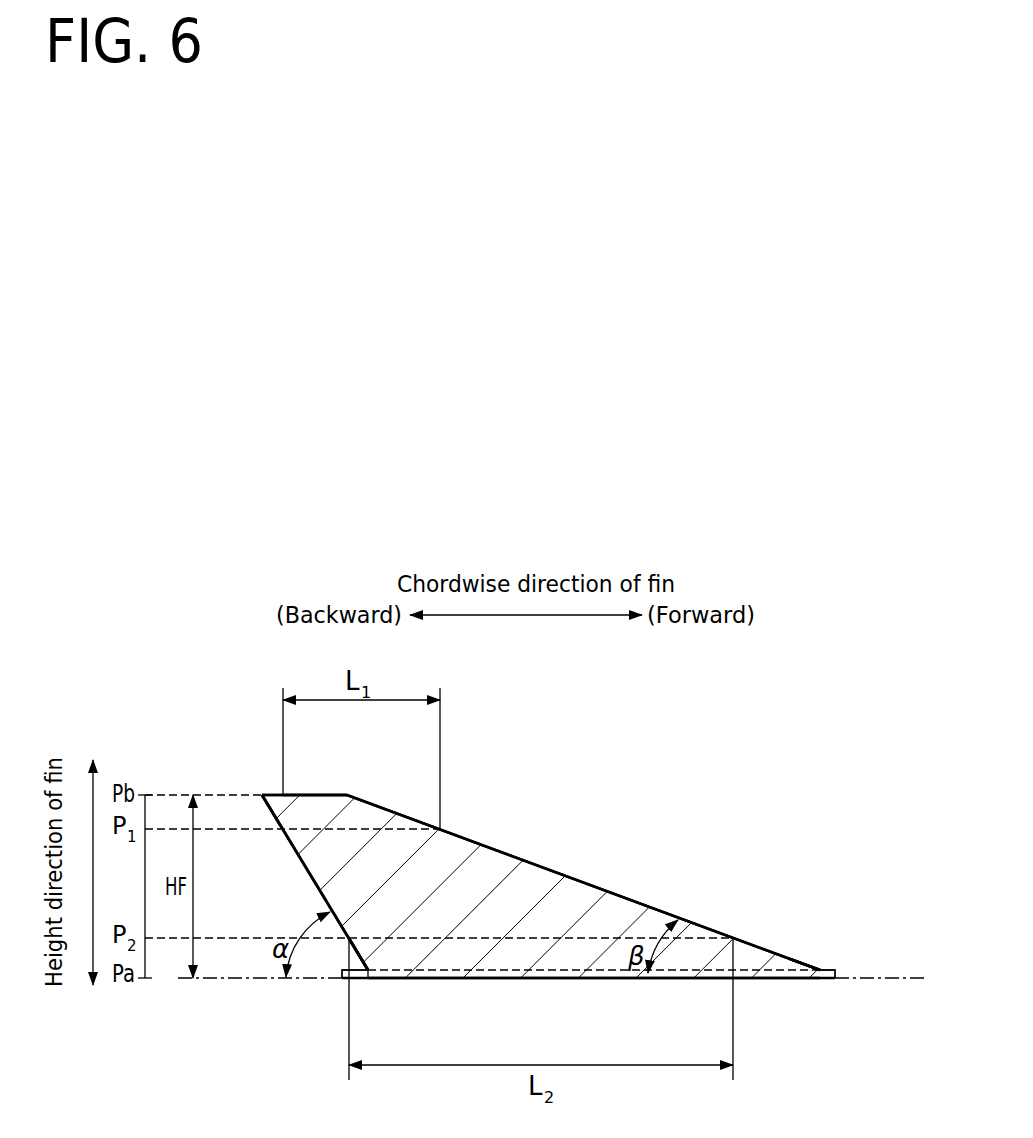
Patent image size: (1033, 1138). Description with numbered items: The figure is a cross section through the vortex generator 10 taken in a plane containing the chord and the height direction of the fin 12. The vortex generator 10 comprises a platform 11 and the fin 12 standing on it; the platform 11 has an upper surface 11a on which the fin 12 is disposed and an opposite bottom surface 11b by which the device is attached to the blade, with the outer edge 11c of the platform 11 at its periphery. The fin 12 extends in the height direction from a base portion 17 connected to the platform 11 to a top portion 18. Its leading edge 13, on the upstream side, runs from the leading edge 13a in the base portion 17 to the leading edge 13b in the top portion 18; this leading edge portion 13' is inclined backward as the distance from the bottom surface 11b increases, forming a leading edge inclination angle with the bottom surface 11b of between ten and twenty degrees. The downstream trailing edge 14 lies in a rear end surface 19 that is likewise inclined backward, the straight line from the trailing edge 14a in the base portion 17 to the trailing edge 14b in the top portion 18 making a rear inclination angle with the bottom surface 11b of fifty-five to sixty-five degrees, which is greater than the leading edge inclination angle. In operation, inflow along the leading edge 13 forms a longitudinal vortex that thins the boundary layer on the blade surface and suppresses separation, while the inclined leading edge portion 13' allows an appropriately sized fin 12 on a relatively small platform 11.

The vortex generator 10 is at (868, 633).
The platform 11 is at (356, 980).
The upper surface 11a is at (830, 972).
The bottom surface 11b is at (583, 978).
The outer edge 11c is at (342, 973).
The fin 12 is at (473, 860).
The leading edge 13 is at (541, 882).
The leading edge portion 13' is at (583, 876).
The leading edge in the base portion 13a is at (820, 970).
The leading edge in the top portion 13b is at (345, 795).
The trailing edge 14 is at (311, 883).
The trailing edge in the base portion 14a is at (366, 968).
The trailing edge in the top portion 14b is at (262, 795).
The base portion 17 is at (585, 955).
The top portion 18 is at (305, 795).
The rear end surface 19 is at (315, 882).